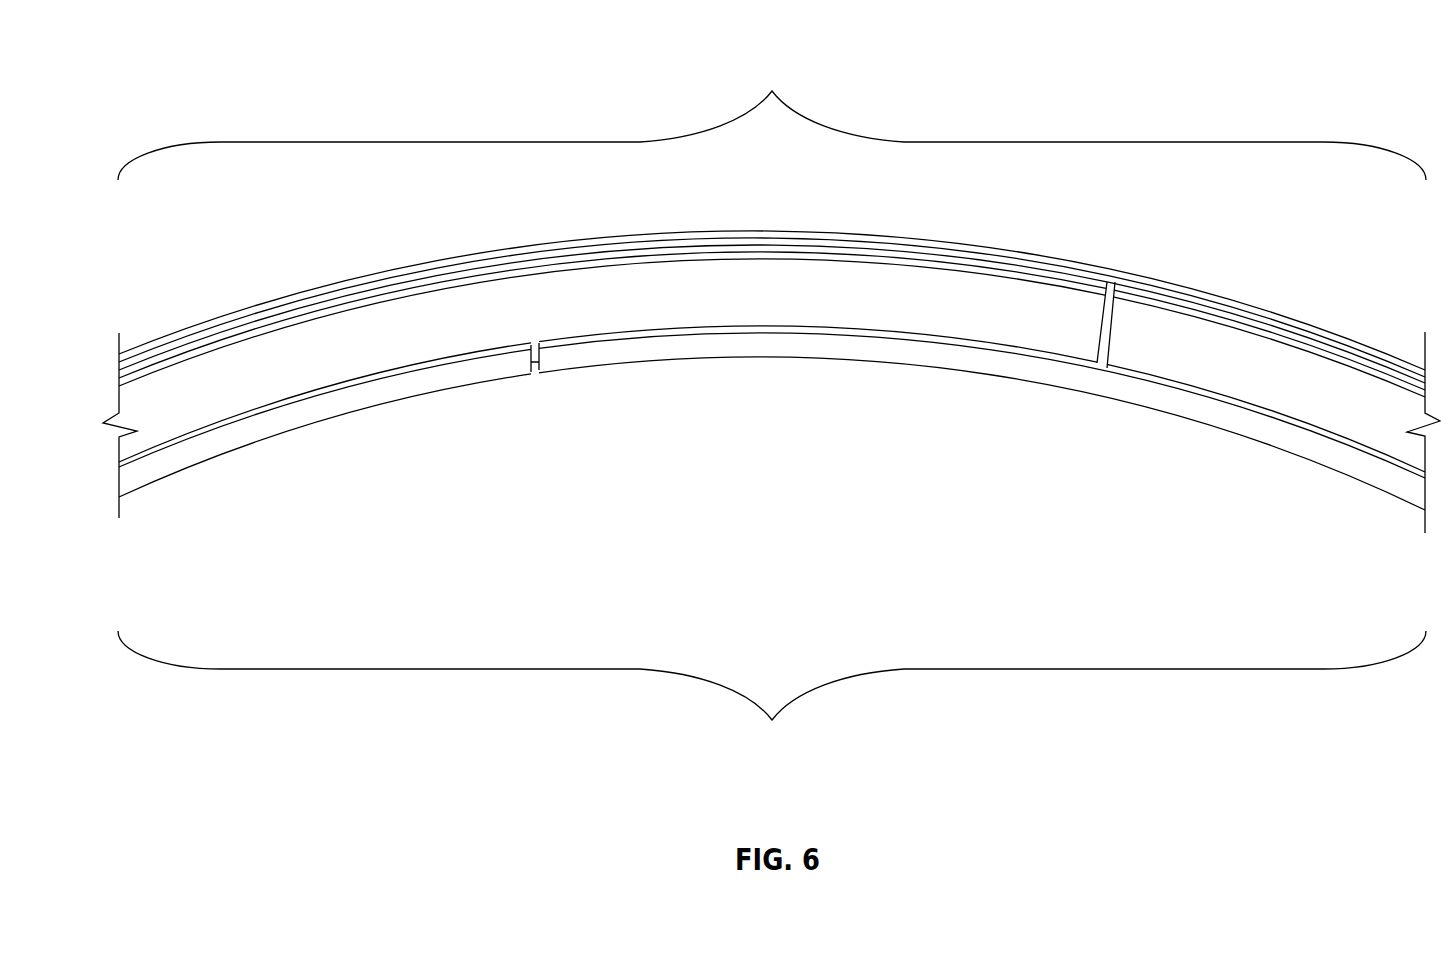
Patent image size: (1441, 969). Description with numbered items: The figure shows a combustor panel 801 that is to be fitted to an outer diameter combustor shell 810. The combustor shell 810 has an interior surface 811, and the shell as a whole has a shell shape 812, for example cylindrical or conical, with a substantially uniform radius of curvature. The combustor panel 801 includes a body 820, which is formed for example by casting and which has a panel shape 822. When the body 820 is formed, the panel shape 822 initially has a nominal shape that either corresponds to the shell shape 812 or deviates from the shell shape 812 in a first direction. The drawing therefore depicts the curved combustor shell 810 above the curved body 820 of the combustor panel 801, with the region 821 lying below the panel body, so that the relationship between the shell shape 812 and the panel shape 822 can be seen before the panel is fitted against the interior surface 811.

The combustor panel 801 is at (150, 553).
The outer diameter combustor shell 810 is at (300, 301).
The interior surface 811 is at (157, 358).
The shell shape 812 is at (772, 116).
The body 820 is at (405, 343).
The lower region / cavity 821 is at (794, 531).
The panel shape 822 is at (772, 695).